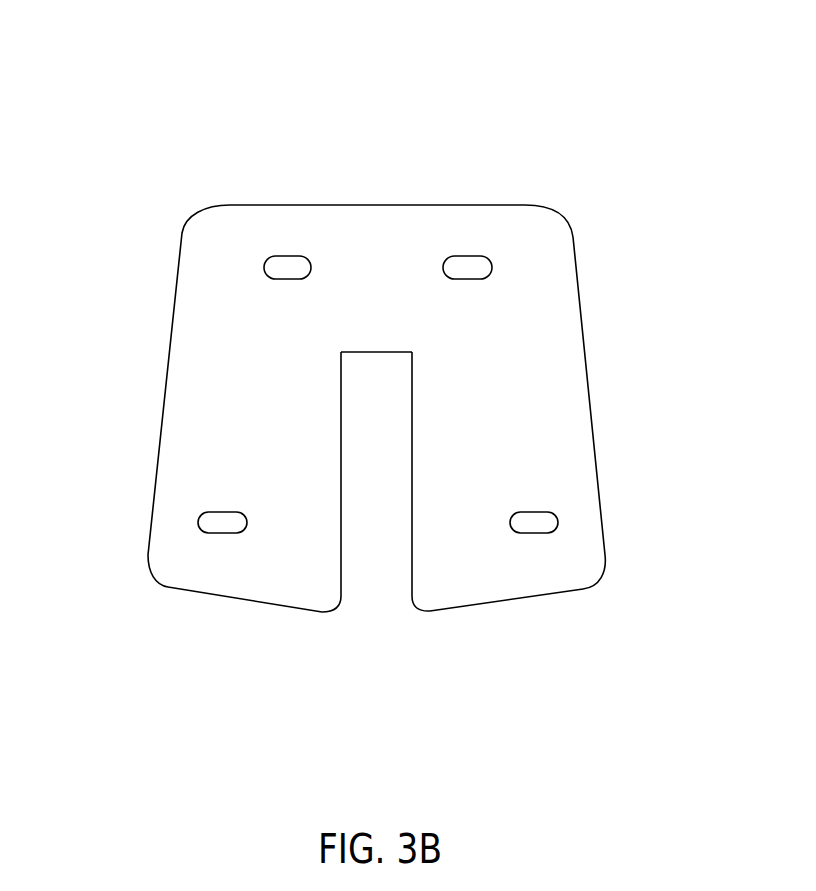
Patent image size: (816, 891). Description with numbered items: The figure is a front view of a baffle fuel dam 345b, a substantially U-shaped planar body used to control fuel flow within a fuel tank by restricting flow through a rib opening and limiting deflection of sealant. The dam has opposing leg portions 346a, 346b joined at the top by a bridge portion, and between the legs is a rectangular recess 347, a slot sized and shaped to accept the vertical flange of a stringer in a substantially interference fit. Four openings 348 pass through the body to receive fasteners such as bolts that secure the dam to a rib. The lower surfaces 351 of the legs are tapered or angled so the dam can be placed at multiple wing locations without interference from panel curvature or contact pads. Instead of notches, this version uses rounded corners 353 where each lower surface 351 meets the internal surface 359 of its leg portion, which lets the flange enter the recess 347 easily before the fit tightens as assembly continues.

The baffle fuel dam 345b is at (213, 92).
The leg portion 346a is at (212, 385).
The leg portion 346b is at (562, 402).
The recess 347 is at (398, 395).
The openings 348 is at (289, 267).
The lower surfaces 351 is at (192, 592).
The rounded corners 353 is at (333, 603).
The internal surface 359 is at (341, 425).